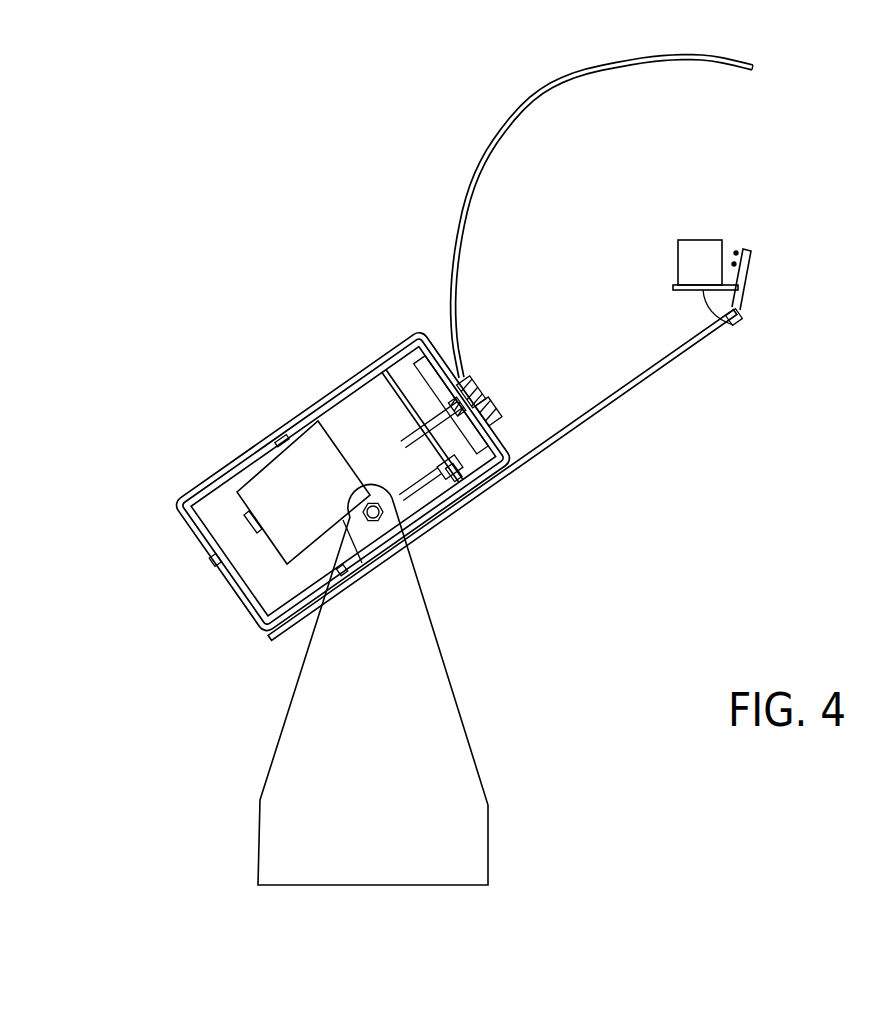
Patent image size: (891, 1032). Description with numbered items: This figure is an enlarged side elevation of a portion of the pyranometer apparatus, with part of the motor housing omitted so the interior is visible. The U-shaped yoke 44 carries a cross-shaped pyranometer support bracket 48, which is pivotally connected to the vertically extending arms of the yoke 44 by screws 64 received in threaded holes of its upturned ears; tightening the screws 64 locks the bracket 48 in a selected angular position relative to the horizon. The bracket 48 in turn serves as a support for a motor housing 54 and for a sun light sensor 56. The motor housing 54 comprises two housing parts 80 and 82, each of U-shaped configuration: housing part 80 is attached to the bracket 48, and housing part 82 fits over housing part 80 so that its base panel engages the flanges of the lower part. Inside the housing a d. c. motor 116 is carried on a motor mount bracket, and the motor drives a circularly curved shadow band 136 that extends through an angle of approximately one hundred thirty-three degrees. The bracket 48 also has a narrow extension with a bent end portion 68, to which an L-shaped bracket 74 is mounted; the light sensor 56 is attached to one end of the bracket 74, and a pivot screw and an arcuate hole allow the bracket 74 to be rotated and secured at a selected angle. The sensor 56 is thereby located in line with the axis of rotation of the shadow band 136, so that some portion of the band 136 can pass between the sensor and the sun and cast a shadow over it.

The U-shaped yoke 44 is at (458, 710).
The pyranometer support bracket 48 is at (603, 400).
The motor housing 54 is at (232, 437).
The sun light sensor 56 is at (697, 257).
The screws 64 is at (395, 502).
The bent end portion 68 is at (746, 282).
The L-shaped bracket 74 is at (742, 318).
The housing part 80 is at (345, 513).
The housing part 82 is at (405, 338).
The d. c. motor 116 is at (280, 553).
The shadow band 136 is at (493, 141).